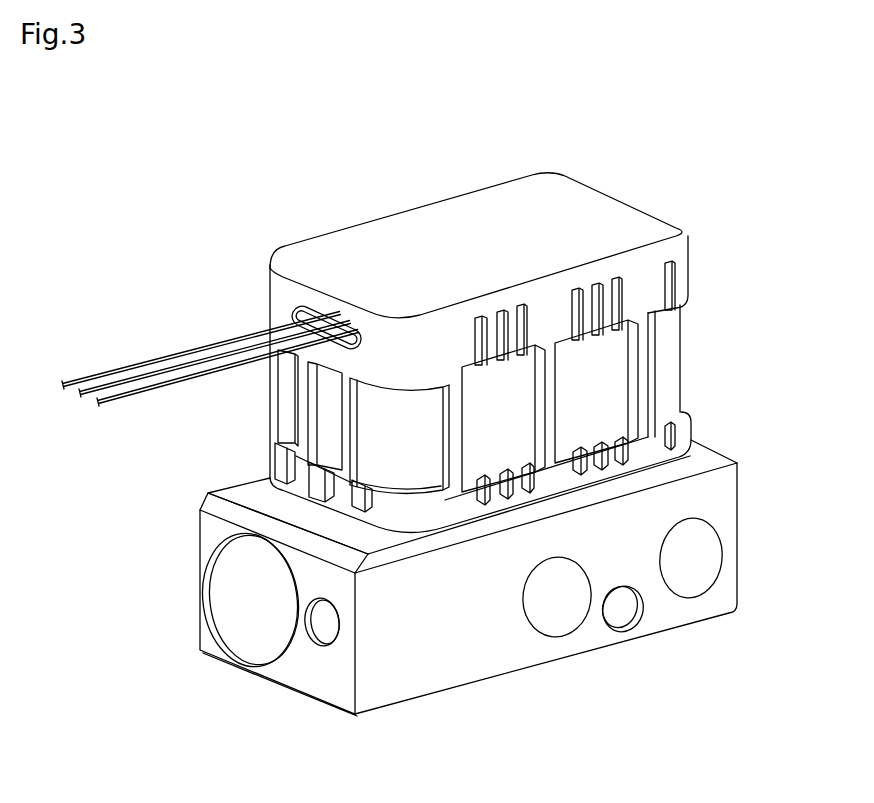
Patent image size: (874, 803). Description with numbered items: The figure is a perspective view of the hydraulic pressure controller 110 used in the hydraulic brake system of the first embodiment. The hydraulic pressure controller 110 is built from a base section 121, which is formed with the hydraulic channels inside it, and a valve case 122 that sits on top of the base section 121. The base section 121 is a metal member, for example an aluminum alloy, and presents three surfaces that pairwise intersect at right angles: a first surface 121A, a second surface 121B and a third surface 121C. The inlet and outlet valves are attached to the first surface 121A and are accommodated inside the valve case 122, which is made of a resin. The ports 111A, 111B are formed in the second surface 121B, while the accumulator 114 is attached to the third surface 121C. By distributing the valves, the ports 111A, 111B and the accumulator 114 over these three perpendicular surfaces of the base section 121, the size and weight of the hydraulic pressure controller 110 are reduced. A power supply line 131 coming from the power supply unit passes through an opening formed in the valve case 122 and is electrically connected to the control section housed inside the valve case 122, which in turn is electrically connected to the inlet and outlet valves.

The hydraulic pressure controller 110 is at (737, 106).
The valve case 122 is at (457, 224).
The power supply line 131 is at (165, 352).
The base section 121 is at (751, 484).
The first surface 121A is at (248, 493).
The second surface 121B is at (713, 470).
The third surface 121C is at (328, 678).
The accumulator 114 is at (250, 632).
The port 111A is at (701, 592).
The port 111B is at (562, 636).